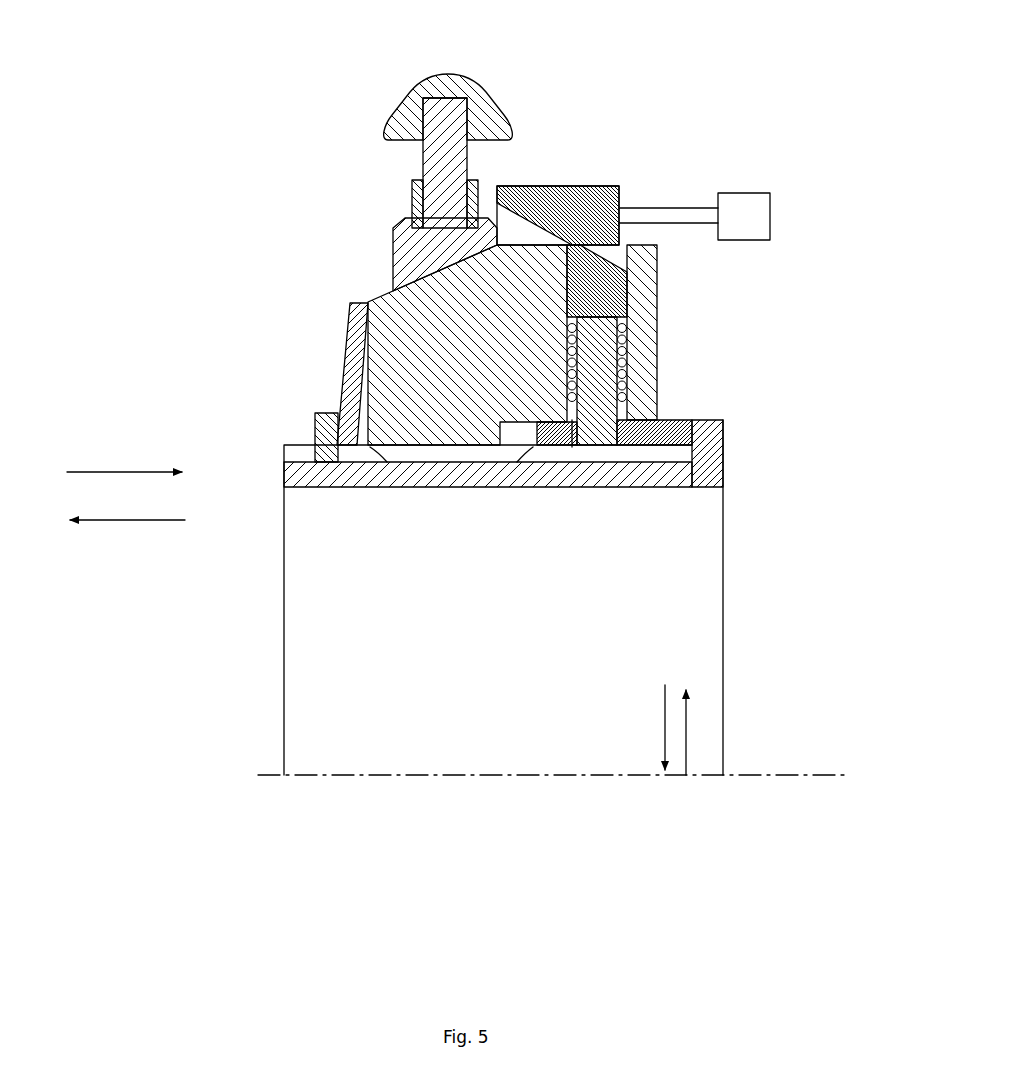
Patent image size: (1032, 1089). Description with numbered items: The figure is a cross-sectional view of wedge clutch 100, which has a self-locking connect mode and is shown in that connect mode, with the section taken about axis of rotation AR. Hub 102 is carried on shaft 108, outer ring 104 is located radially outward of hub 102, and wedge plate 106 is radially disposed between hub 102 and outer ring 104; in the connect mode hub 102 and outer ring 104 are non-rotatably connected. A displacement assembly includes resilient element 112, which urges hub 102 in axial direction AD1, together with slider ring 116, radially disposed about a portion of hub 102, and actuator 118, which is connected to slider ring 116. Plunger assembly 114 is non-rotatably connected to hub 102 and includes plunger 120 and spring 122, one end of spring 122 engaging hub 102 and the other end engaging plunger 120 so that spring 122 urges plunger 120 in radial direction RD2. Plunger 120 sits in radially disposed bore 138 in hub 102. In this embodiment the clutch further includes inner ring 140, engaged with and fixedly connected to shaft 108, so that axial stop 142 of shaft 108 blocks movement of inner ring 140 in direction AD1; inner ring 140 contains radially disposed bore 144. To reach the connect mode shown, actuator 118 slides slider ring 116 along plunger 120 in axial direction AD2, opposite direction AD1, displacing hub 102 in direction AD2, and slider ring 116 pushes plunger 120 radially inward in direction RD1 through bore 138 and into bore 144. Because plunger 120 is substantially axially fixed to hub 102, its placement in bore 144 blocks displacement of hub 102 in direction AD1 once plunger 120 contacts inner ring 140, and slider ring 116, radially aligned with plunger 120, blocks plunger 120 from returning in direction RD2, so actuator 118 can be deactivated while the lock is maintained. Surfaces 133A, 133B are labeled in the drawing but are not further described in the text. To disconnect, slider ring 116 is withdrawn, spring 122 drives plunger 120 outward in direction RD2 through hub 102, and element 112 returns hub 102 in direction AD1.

The wedge clutch 100 is at (705, 67).
The hub 102 is at (372, 300).
The outer ring 104 is at (440, 72).
The wedge plate 106 is at (423, 167).
The shaft 108 is at (357, 493).
The resilient element 112 is at (345, 352).
The plunger assembly 114 is at (640, 357).
The slider ring 116 is at (514, 185).
The actuator 118 is at (745, 193).
The plunger 120 is at (597, 410).
The spring 122 is at (626, 322).
The first cam surface 133A is at (572, 250).
The second cam surface 133B is at (567, 290).
The radially disposed bore 138 is at (568, 415).
The inner ring 140 is at (655, 452).
The axial stop 142 is at (723, 440).
The radially disposed bore 144 is at (572, 447).
The axial direction AD1 is at (105, 472).
The axial direction AD2 is at (123, 520).
The radial direction RD1 is at (665, 747).
The radial direction RD2 is at (686, 742).
The axis of rotation AR is at (743, 777).